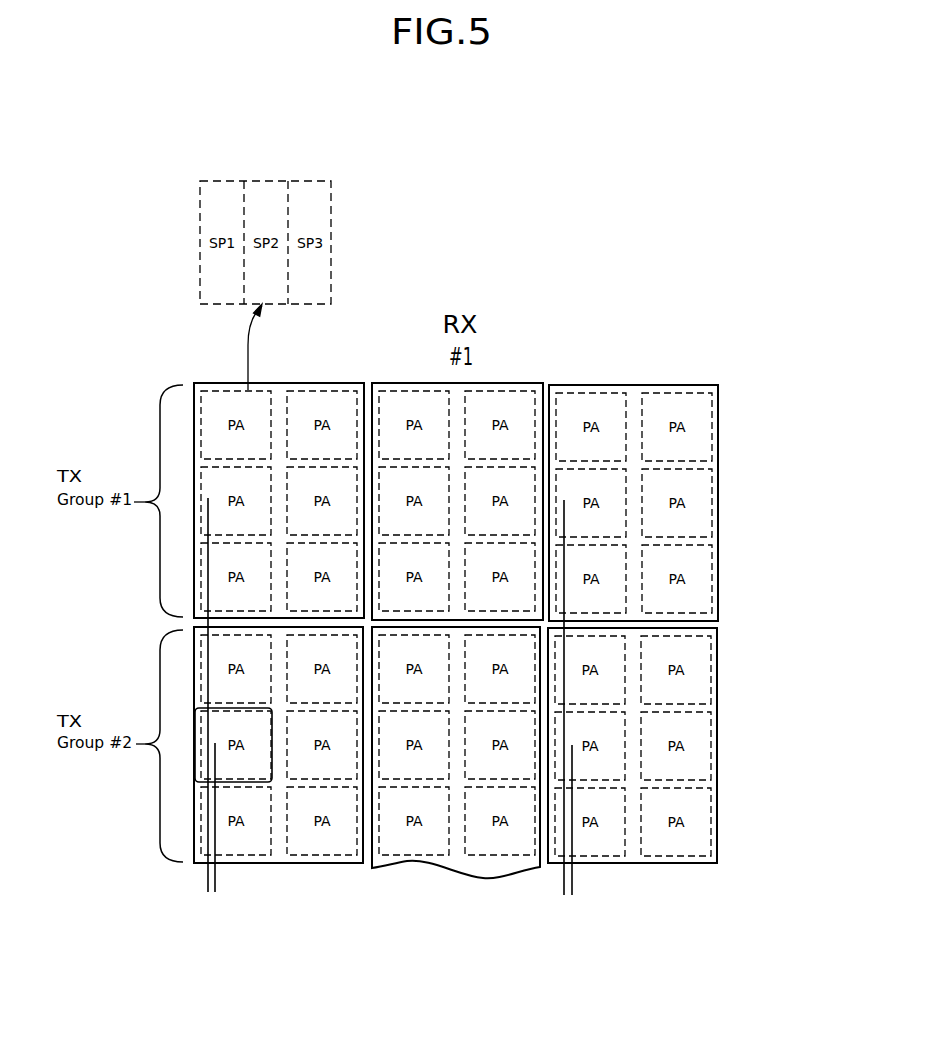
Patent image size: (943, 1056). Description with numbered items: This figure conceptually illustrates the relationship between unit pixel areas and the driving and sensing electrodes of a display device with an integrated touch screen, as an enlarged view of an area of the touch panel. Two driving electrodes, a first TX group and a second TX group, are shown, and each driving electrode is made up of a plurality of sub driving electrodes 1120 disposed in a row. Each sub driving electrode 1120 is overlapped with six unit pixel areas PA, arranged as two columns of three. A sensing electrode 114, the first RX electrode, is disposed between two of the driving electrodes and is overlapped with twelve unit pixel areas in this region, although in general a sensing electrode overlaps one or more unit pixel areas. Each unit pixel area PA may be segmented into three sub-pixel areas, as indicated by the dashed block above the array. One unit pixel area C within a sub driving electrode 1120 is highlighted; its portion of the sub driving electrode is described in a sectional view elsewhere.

The sub driving electrode 1120 is at (318, 382).
The sensing electrode 114 is at (495, 383).
The unit pixel area C is at (195, 755).